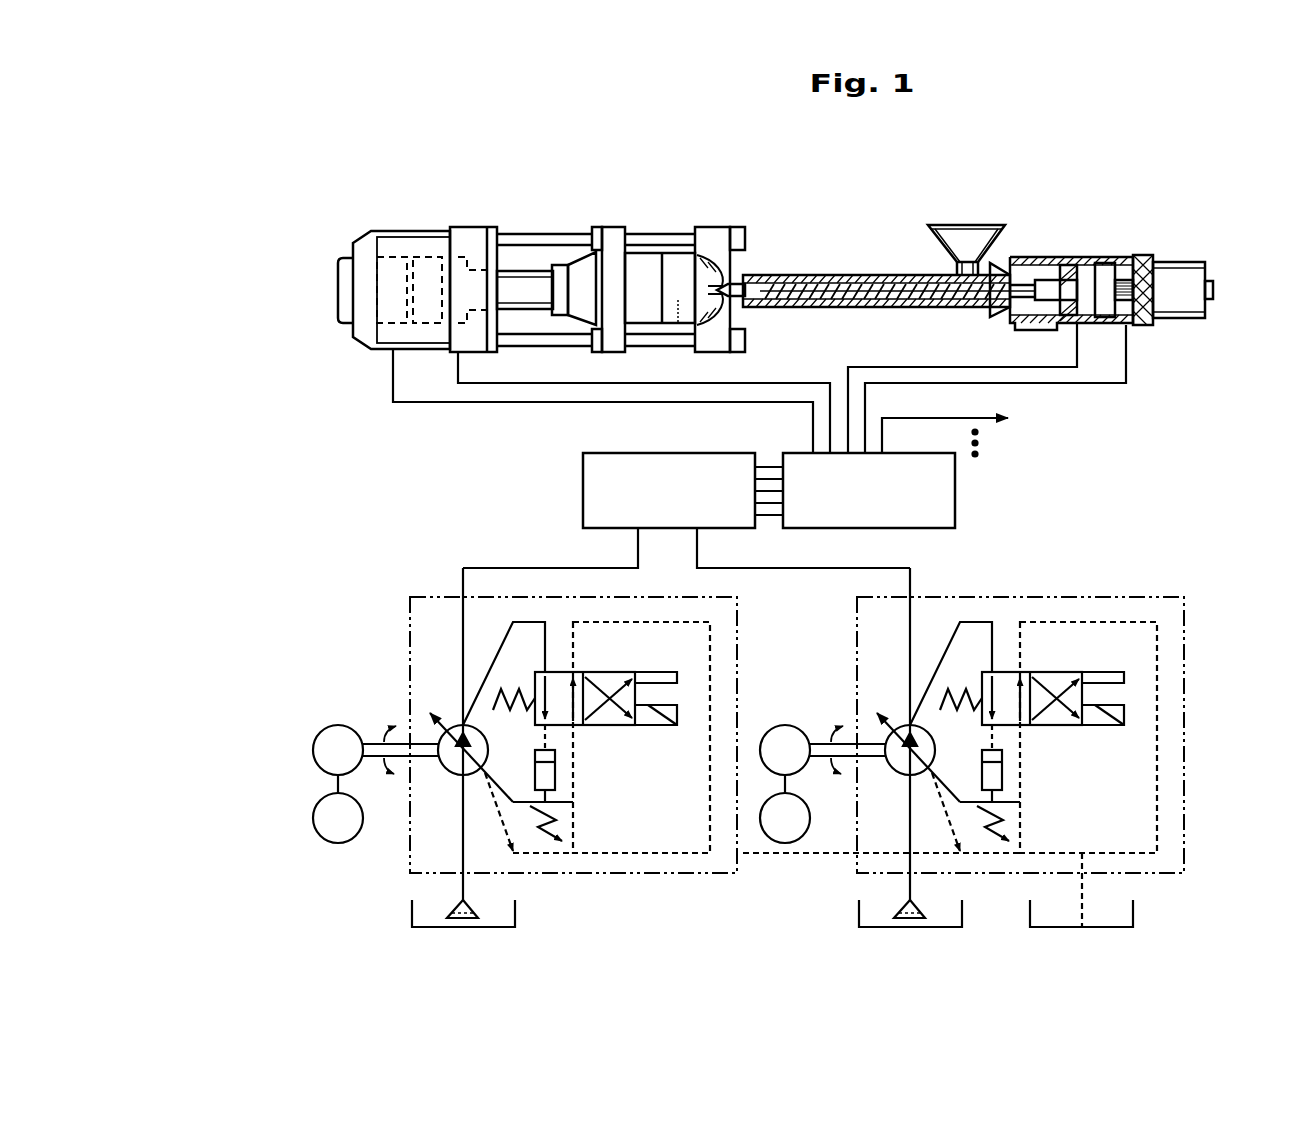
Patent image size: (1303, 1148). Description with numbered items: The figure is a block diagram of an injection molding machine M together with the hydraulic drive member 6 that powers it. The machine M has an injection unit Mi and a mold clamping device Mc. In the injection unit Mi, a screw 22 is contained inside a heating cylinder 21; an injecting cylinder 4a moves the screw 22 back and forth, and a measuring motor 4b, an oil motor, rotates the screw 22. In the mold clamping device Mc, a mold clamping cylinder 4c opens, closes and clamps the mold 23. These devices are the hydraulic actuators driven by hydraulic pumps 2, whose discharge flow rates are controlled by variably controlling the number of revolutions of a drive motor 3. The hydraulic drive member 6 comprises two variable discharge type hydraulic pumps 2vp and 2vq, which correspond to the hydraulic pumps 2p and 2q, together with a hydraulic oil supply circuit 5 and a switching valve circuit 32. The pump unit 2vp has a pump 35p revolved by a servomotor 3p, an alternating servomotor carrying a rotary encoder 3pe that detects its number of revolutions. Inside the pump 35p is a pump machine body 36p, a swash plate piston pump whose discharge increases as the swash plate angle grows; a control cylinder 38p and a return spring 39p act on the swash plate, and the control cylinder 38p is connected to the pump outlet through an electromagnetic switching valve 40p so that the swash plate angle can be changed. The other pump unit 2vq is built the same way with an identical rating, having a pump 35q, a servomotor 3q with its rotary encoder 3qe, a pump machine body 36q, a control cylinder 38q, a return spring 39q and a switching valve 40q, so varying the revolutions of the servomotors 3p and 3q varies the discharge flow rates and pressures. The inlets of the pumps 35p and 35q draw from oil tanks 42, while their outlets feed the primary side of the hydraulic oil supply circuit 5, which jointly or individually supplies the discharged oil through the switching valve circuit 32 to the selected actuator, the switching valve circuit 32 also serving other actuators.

The injection molding machine M is at (775, 258).
The mold clamping device Mc is at (541, 260).
The injection unit Mi is at (965, 271).
The mold clamping cylinder 4c is at (400, 255).
The mold 23 is at (668, 250).
The heating cylinder 21 is at (808, 308).
The screw 22 is at (868, 275).
The injecting cylinder 4a is at (1097, 257).
The measuring motor 4b is at (1182, 262).
The hydraulic drive member 6 is at (811, 425).
The hydraulic oil supply circuit 5 is at (582, 487).
The switching valve circuit 32 is at (956, 496).
The hydraulic pump 2 is at (769, 734).
The hydraulic pump 2p is at (495, 742).
The hydraulic pump 2q is at (1005, 737).
The variable discharge type hydraulic pump 2vp is at (406, 640).
The variable discharge type hydraulic pump 2vq is at (1062, 735).
The drive motor 3 is at (759, 744).
The servomotor 3p is at (333, 724).
The servomotor 3q is at (822, 717).
The rotary encoder 3pe is at (322, 840).
The rotary encoder 3qe is at (776, 846).
The pump machine body 36p is at (455, 776).
The pump machine body 36q is at (940, 734).
The control cylinder 38p is at (555, 770).
The control cylinder 38q is at (1029, 764).
The return spring 39p is at (560, 820).
The return spring 39q is at (1034, 823).
The switching valve 40p is at (630, 725).
The switching valve 40q is at (1023, 705).
The pump 35p is at (617, 882).
The pump 35q is at (742, 800).
The oil tank 42 is at (760, 744).